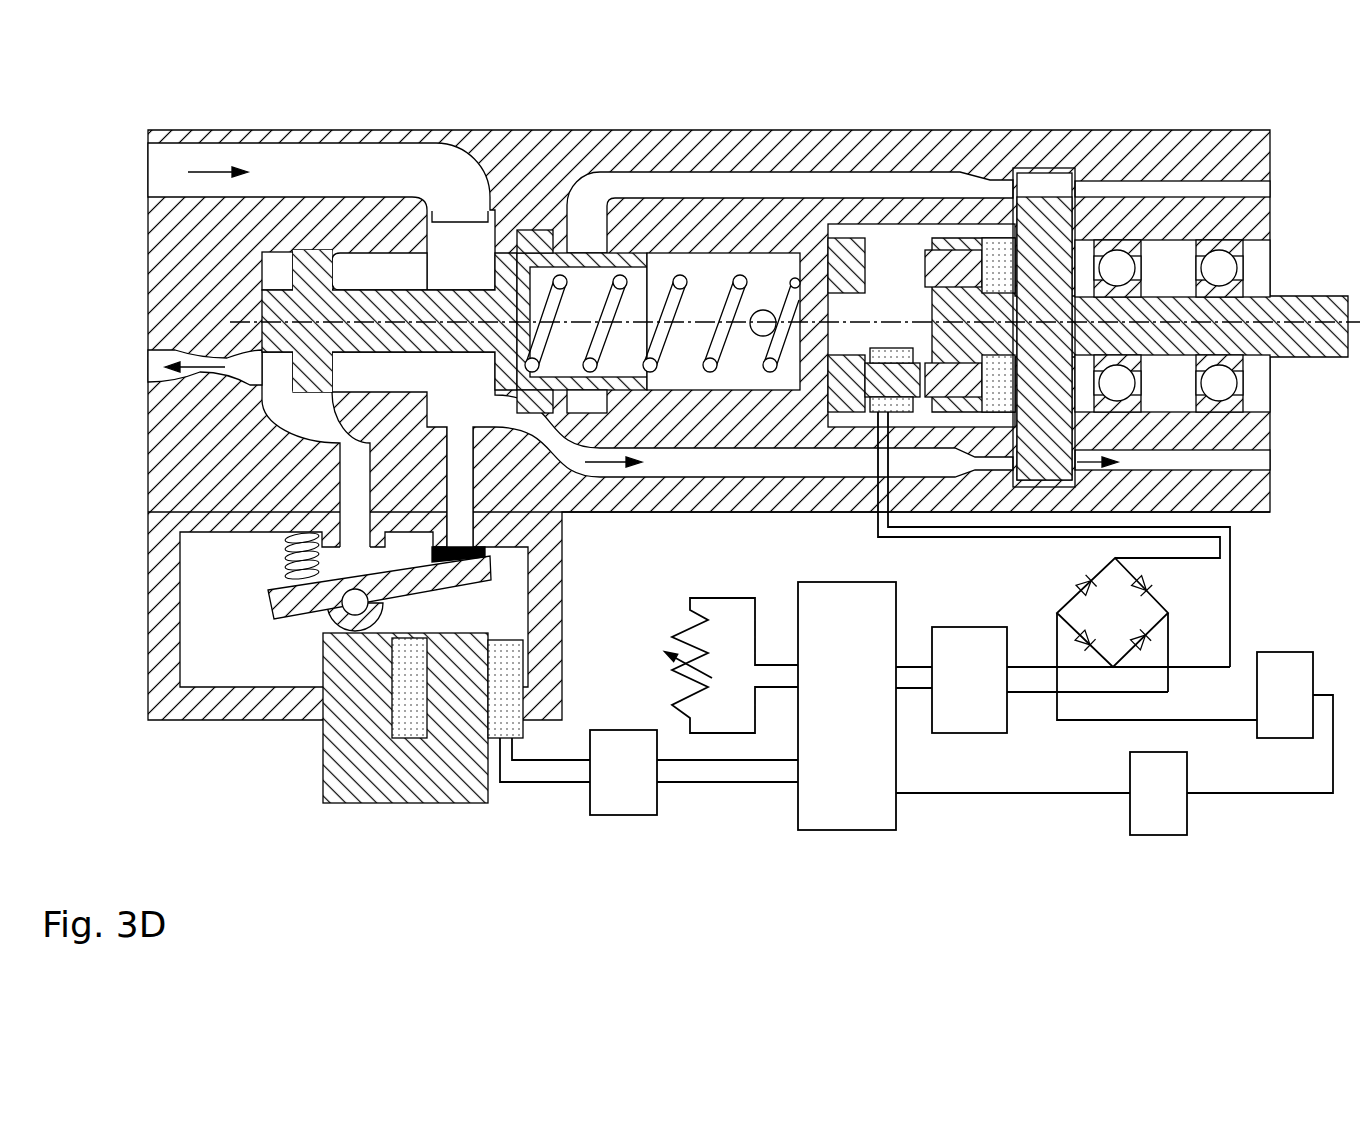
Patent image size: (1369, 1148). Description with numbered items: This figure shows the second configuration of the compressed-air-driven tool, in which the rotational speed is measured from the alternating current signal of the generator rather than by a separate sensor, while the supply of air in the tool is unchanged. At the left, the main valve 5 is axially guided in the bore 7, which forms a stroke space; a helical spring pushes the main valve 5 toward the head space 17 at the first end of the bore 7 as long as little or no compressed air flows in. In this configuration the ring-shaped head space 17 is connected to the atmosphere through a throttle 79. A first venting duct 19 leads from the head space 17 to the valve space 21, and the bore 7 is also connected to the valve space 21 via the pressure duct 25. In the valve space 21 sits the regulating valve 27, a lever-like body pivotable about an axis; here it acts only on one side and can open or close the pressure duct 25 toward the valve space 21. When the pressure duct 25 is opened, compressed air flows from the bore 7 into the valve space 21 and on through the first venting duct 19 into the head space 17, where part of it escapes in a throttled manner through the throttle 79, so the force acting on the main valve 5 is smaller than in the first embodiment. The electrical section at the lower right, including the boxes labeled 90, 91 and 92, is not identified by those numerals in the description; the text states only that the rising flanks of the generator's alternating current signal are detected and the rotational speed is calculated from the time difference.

The main valve 5 is at (402, 312).
The bore 7 is at (362, 246).
The head space 17 is at (278, 275).
The first venting duct 19 is at (322, 425).
The valve space 21 is at (215, 663).
The pressure duct 25 is at (457, 470).
The regulating valve 27 is at (303, 600).
The throttle 79 is at (165, 372).
The control unit 90 is at (1290, 700).
The sensor 91 is at (1162, 790).
The power supply 92 is at (625, 775).